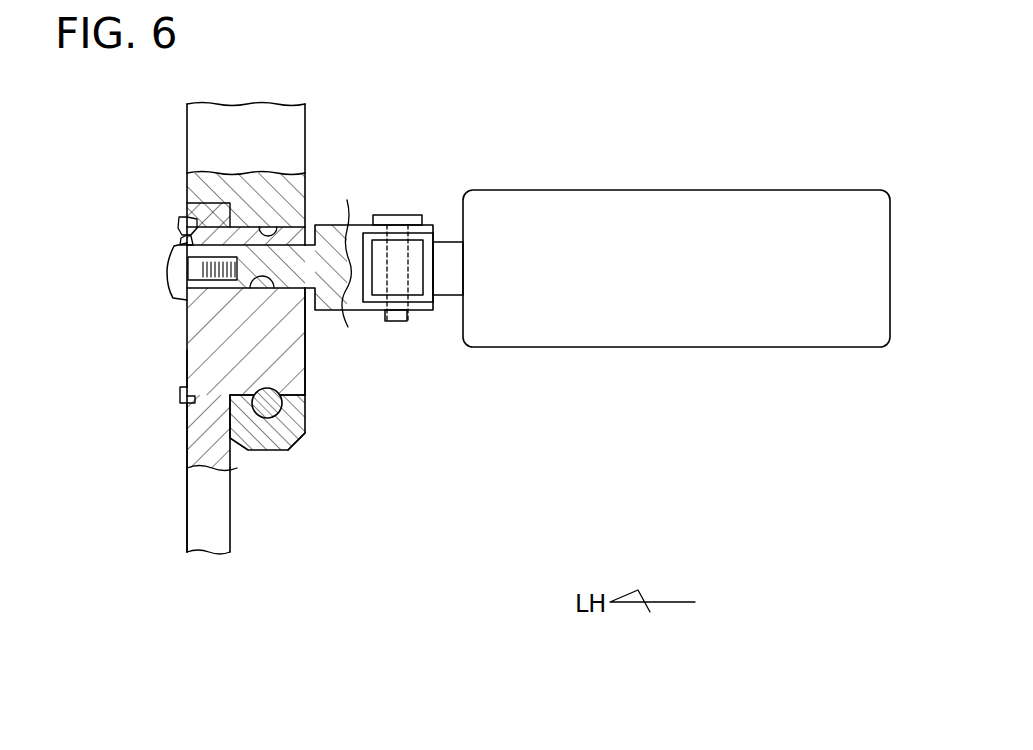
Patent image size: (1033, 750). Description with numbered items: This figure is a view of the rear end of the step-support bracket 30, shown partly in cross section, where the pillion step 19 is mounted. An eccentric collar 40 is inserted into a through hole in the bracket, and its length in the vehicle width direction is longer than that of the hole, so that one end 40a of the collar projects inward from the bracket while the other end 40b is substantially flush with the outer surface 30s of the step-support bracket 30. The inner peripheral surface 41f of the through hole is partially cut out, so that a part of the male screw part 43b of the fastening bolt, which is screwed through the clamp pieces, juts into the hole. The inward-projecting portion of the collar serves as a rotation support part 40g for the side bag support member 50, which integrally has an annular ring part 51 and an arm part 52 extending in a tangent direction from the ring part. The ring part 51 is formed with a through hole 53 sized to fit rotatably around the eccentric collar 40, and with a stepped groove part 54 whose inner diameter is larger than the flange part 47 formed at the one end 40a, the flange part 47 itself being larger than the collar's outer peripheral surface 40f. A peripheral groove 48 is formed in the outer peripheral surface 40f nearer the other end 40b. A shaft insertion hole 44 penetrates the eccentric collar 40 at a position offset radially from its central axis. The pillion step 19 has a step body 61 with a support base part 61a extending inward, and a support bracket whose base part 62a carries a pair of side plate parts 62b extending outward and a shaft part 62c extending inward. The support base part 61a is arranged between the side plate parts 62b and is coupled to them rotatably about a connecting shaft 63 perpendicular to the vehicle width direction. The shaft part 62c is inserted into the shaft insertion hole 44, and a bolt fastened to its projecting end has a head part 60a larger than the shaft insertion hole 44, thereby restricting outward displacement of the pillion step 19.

The pillion step 19 is at (627, 178).
The step-support bracket 30 is at (312, 118).
The outer surface of step-support bracket 30s is at (307, 428).
The eccentric collar 40 is at (176, 347).
The one end of eccentric collar 40a is at (186, 365).
The other end of eccentric collar 40b is at (305, 363).
The outer peripheral surface of eccentric collar 40f is at (210, 445).
The rotation support part 40g is at (187, 440).
The inner peripheral surface of through hole 41f is at (310, 400).
The male screw part 43b is at (265, 418).
The shaft insertion hole 44 is at (313, 312).
The flange part 47 is at (180, 398).
The peripheral groove 48 is at (270, 227).
The side bag support member 50 is at (176, 540).
The ring part 51 is at (205, 210).
The arm part 52 is at (197, 508).
The through hole of ring part 53 is at (180, 243).
The stepped groove part 54 is at (180, 225).
The head part of bolt 60a is at (167, 267).
The step body 61 is at (762, 200).
The support base part 61a is at (442, 240).
The base part 62a is at (338, 225).
The side plate parts 62b is at (427, 233).
The shaft part 62c is at (258, 290).
The connecting shaft 63 is at (397, 322).